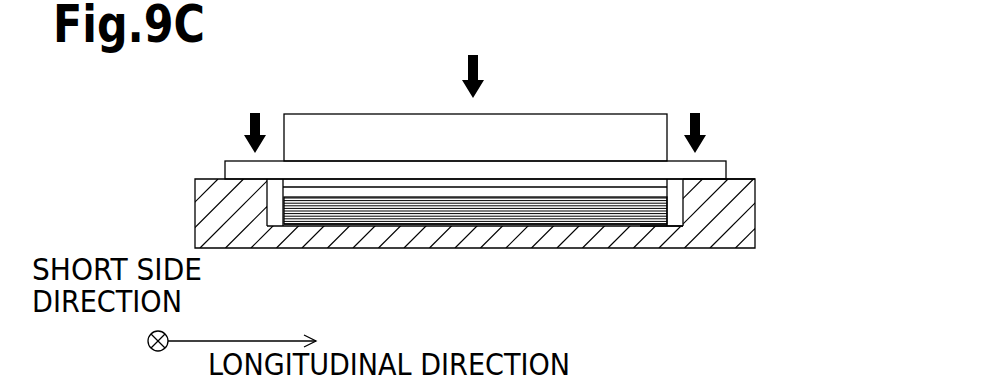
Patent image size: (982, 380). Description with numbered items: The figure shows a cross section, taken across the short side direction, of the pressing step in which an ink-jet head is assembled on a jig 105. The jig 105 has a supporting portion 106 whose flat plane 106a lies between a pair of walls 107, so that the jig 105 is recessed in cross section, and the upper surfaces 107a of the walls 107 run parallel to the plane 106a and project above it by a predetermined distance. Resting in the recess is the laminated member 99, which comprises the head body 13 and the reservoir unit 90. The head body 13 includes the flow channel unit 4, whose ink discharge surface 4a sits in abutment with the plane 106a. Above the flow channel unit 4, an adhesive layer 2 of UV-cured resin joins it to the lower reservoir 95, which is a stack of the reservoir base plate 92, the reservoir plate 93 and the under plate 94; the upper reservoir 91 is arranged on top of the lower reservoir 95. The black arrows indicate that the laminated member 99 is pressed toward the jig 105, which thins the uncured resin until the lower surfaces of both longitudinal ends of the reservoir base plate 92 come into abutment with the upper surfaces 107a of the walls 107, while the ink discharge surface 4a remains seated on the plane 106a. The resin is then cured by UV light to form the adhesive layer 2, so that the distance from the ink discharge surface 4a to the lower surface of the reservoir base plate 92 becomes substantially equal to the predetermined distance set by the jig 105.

The adhesive layer 2 is at (375, 197).
The flow channel unit 4 is at (296, 228).
The ink discharge surface 4a is at (542, 228).
The head body 13 is at (648, 228).
The reservoir unit 90 is at (475, 98).
The upper reservoir 91 is at (532, 138).
The reservoir base plate 92 is at (569, 172).
The reservoir plate 93 is at (605, 183).
The under plate 94 is at (642, 193).
The lower reservoir 95 is at (475, 117).
The laminated member 99 is at (683, 93).
The jig 105 is at (760, 247).
The supporting portion 106 is at (352, 238).
The plane 106a is at (450, 214).
The walls 107 is at (702, 202).
The upper surfaces 107a is at (745, 179).